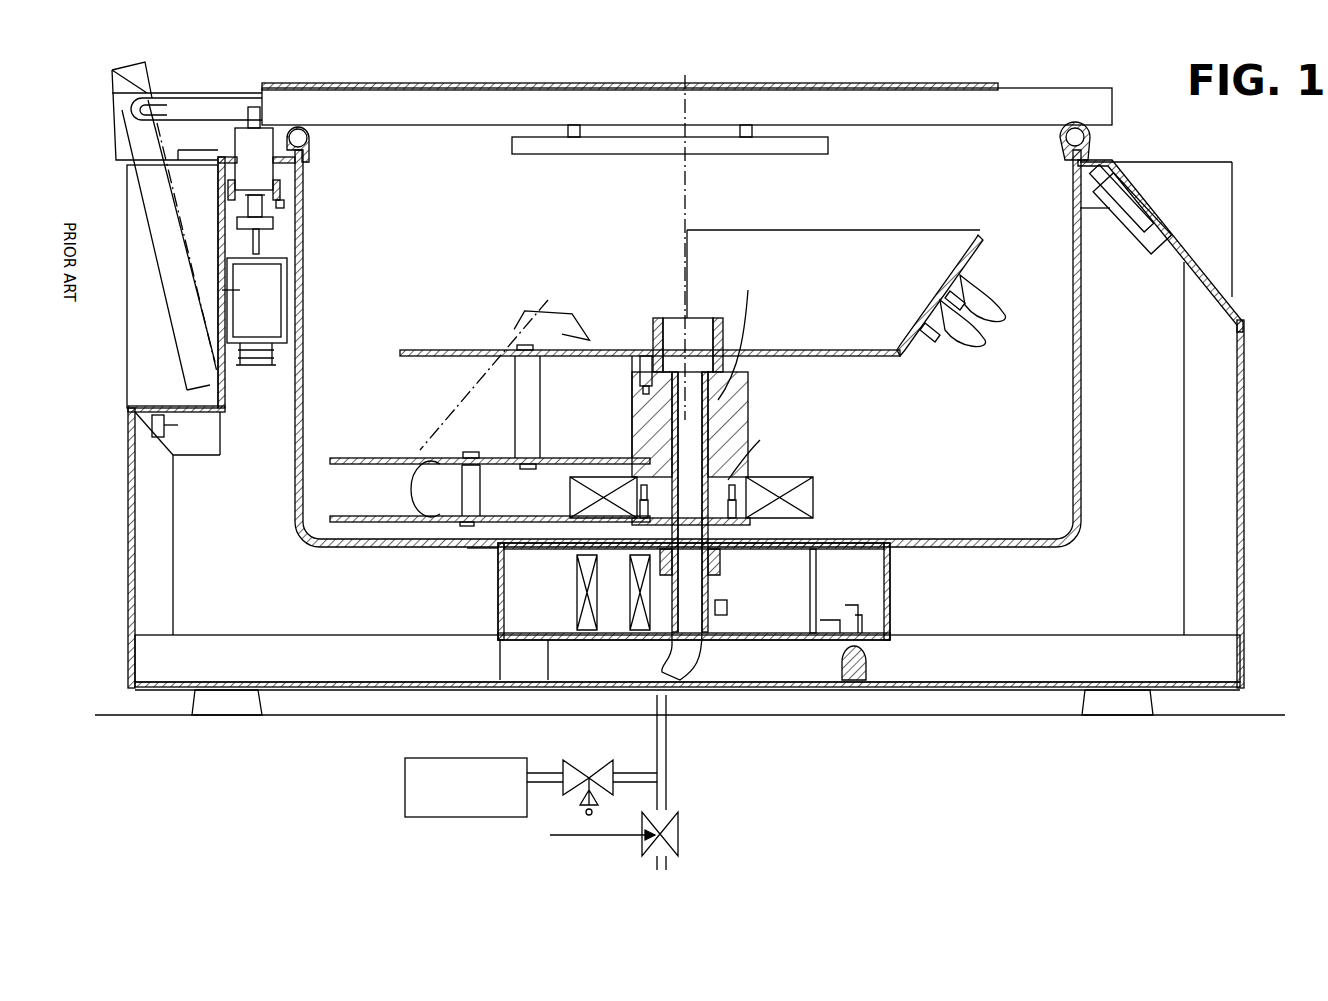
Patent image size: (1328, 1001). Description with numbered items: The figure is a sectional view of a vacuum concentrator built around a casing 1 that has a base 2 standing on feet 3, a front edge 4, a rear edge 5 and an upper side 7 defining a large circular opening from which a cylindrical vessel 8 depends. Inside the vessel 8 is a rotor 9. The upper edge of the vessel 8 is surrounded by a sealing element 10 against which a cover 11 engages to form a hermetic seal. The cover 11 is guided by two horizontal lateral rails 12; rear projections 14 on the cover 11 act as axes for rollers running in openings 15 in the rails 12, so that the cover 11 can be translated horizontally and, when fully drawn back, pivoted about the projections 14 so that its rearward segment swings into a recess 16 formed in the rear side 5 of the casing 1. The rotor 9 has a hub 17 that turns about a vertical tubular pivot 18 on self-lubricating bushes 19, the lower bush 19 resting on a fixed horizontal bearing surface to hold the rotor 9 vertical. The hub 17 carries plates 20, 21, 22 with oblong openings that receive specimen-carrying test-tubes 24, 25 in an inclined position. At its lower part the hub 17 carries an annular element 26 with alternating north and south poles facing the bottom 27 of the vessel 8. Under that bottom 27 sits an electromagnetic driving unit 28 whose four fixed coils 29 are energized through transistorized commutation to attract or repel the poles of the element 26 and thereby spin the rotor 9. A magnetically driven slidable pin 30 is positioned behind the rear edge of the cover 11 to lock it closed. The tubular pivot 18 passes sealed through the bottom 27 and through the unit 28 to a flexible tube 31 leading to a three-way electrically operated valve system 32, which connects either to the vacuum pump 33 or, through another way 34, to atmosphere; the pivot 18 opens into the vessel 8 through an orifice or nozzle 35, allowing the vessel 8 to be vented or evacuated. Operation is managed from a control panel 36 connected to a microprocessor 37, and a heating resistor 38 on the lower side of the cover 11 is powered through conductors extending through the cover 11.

The casing 1 is at (1246, 462).
The base 2 is at (940, 700).
The feet 3 is at (212, 705).
The front edge 4 is at (1246, 585).
The rear edge 5 is at (128, 648).
The upper side 7 is at (1150, 160).
The cylindrical vessel 8 is at (294, 485).
The rotor 9 is at (845, 372).
The sealing element 10 is at (312, 140).
The cover 11 is at (410, 100).
The horizontal lateral rails 12 is at (220, 100).
The rear projections 14 is at (150, 110).
The openings 15 is at (196, 108).
The recess 16 is at (160, 368).
The hub 17 is at (770, 350).
The vertical tubular pivot 18 is at (697, 335).
The self-lubricating bushes 19 is at (745, 330).
The plate 20 is at (415, 350).
The plate 21 is at (410, 458).
The plate 22 is at (350, 516).
The specimen carrying test-tube 24 is at (525, 305).
The specimen carrying test-tube 25 is at (955, 355).
The annular element 26 is at (814, 500).
The bottom 27 is at (1005, 540).
The electromagnetic driving unit 28 is at (892, 595).
The fixed coils 29 is at (575, 600).
The slidable pin 30 is at (235, 108).
The flexible tube 31 is at (710, 650).
The three-way electrically operated valve system 32 is at (610, 840).
The vacuum pump 33 is at (455, 800).
The way to atmosphere 34 is at (670, 866).
The orifice or nozzle 35 is at (676, 318).
The control panel 36 is at (1200, 258).
The microprocessor 37 is at (1140, 195).
The heating resistor 38 is at (780, 130).